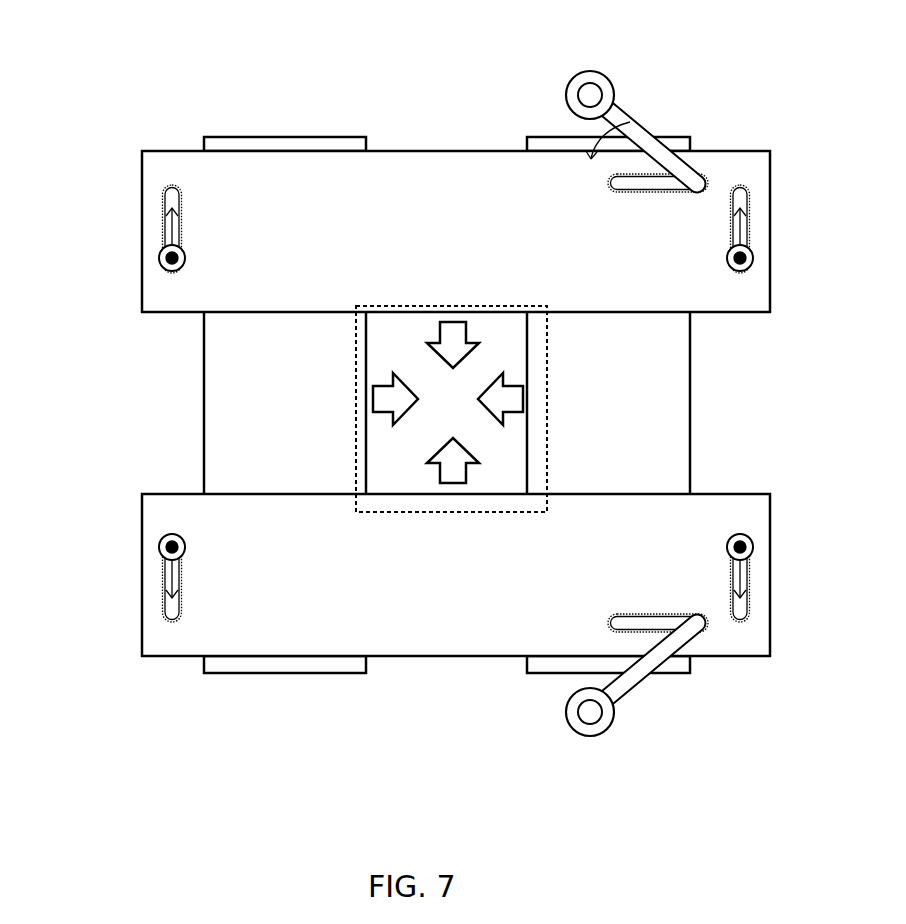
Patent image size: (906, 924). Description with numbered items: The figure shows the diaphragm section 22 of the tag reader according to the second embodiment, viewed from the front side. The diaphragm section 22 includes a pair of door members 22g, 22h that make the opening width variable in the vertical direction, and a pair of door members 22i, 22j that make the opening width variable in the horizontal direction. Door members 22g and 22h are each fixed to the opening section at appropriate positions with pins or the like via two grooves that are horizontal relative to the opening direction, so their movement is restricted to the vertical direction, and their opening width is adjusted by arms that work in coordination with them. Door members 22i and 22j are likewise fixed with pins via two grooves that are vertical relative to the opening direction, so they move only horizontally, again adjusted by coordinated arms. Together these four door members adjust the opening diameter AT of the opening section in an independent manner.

The diaphragm section 22 is at (75, 63).
The door member 22g is at (383, 150).
The door member 22h is at (432, 658).
The door member 22i is at (203, 332).
The door member 22j is at (690, 332).
The opening diameter AT is at (547, 456).